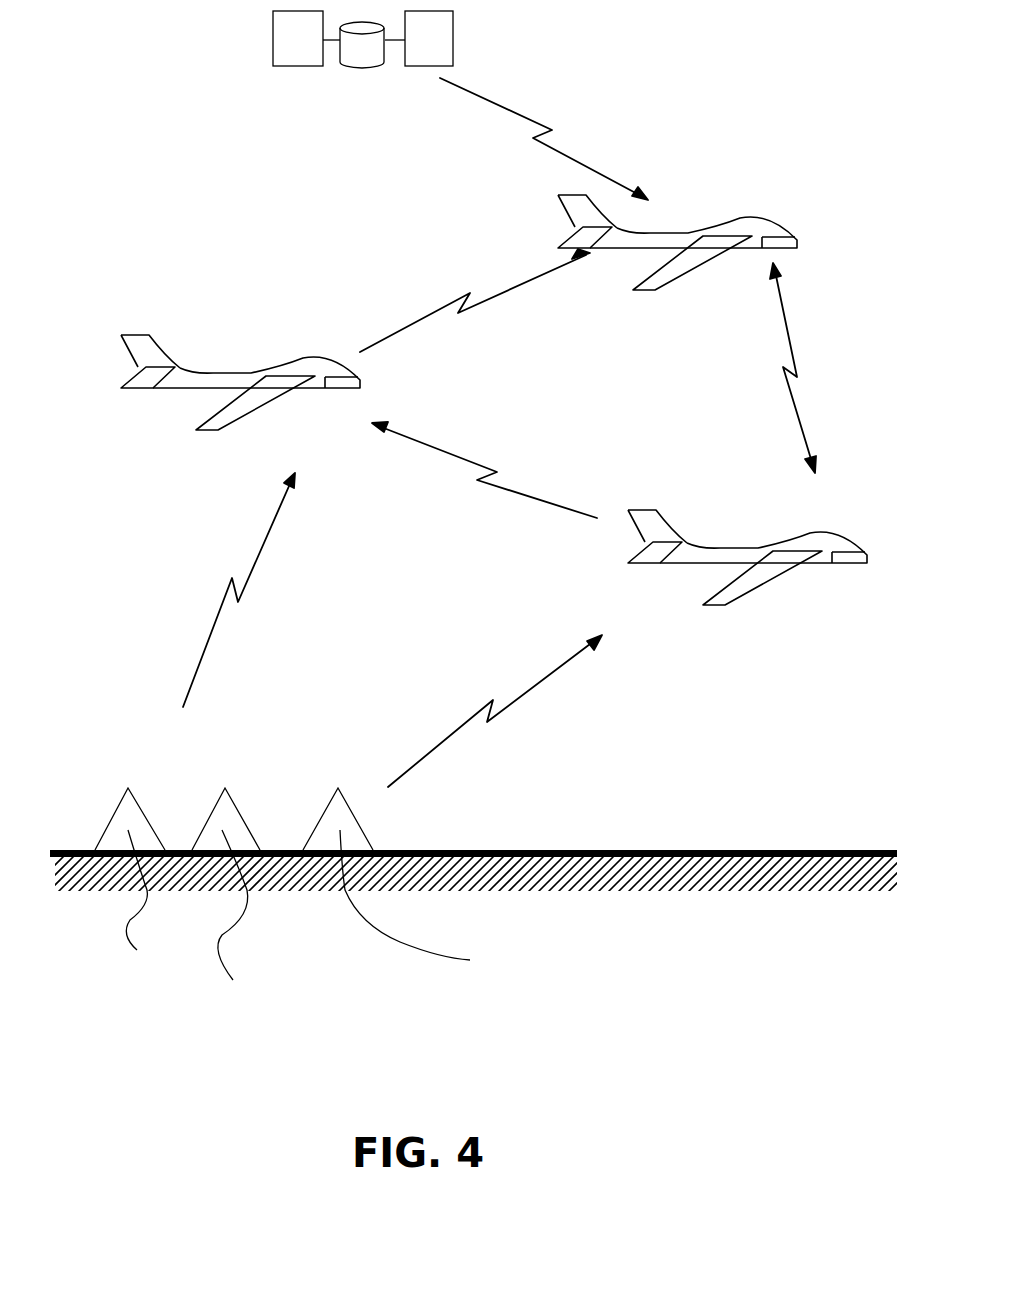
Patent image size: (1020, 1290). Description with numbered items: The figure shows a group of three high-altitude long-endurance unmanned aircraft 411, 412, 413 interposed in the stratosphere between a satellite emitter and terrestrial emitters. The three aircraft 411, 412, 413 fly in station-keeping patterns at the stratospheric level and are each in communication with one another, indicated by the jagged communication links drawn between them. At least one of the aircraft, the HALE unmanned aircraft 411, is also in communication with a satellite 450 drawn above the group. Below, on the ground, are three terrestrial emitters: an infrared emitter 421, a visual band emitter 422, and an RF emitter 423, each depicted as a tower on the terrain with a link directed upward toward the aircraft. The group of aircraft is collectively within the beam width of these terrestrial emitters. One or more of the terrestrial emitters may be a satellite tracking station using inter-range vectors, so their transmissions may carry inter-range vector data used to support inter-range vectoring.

The satellite 450 is at (358, 70).
The HALE unmanned aircraft 411 is at (710, 220).
The HALE unmanned aircraft 412 is at (257, 368).
The HALE unmanned aircraft 413 is at (785, 534).
The infrared emitter 421 is at (108, 817).
The visual band emitter 422 is at (207, 810).
The RF emitter 423 is at (325, 813).